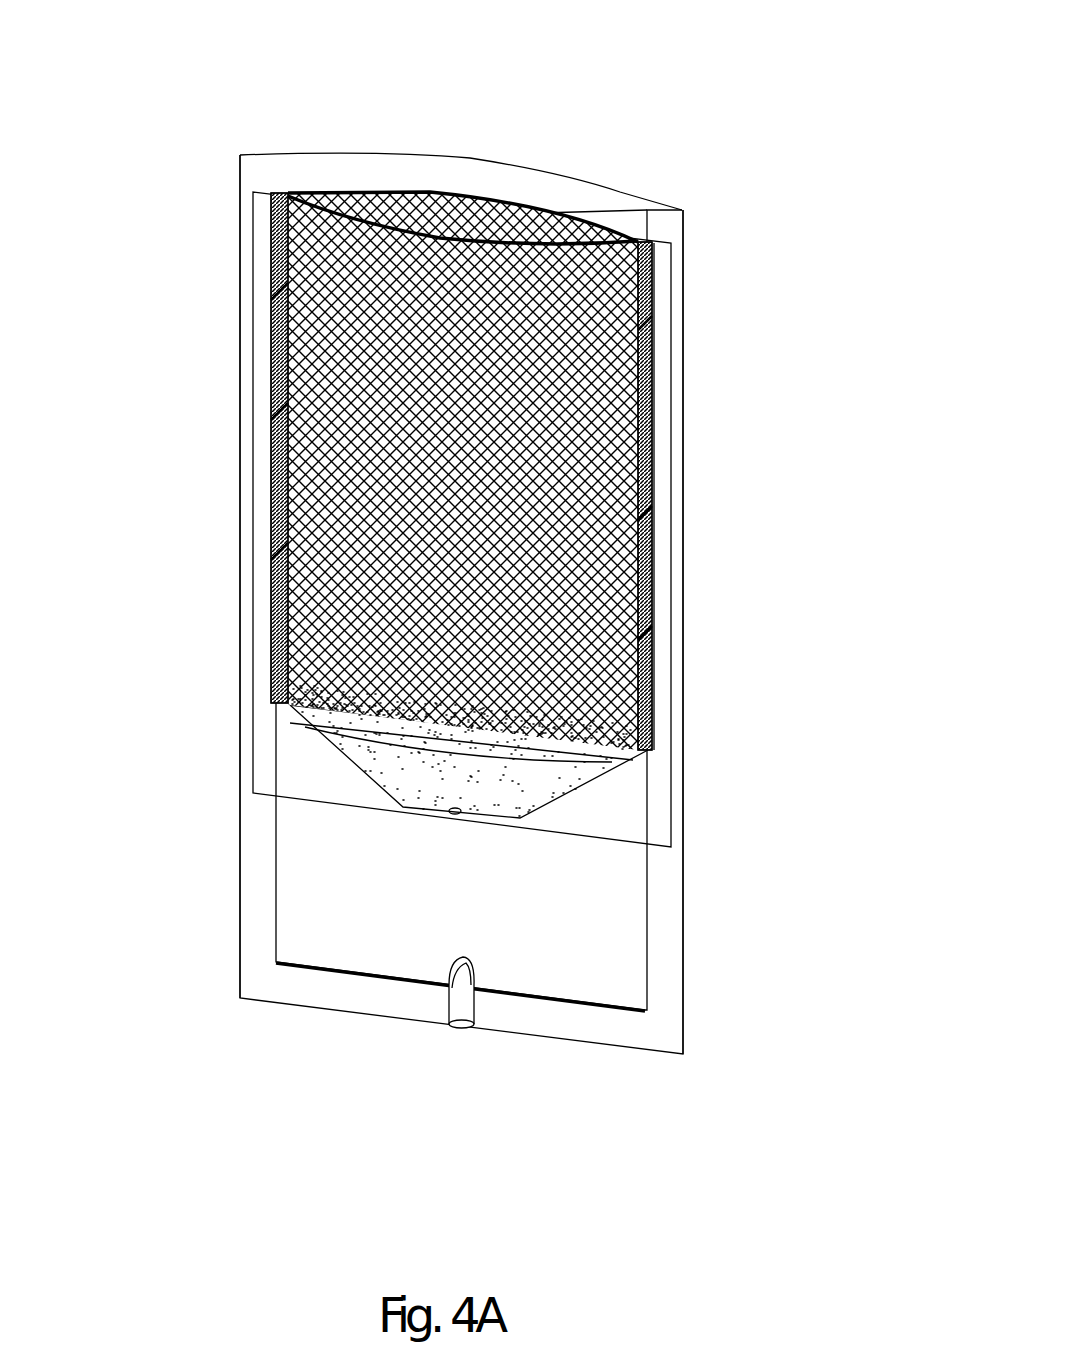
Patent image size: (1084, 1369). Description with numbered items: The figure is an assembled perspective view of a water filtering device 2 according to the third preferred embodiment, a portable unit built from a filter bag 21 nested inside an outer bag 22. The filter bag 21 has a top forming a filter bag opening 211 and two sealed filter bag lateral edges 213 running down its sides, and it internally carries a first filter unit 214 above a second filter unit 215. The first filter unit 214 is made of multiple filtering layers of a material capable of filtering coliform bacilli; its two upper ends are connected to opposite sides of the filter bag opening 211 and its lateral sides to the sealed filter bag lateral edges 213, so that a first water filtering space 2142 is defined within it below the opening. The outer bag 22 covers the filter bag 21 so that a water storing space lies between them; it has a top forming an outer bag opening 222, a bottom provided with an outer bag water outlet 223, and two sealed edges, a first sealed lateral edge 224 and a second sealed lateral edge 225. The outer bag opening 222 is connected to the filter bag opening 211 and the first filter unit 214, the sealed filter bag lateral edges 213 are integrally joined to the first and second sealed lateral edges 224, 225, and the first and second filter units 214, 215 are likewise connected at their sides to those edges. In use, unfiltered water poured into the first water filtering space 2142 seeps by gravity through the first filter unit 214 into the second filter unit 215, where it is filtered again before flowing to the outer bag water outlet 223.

The water filtering device 2 is at (898, 17).
The filter bag 21 is at (581, 442).
The filter bag opening 211 is at (462, 197).
The sealed filter bag lateral edges 213 is at (659, 274).
The first filter unit 214 is at (652, 569).
The first water filtering space 2142 is at (416, 196).
The second filter unit 215 is at (545, 780).
The outer bag 22 is at (490, 561).
The outer bag opening 222 is at (600, 183).
The outer bag water outlet 223 is at (463, 1007).
The first sealed lateral edge 224 is at (240, 325).
The second sealed lateral edge 225 is at (683, 448).